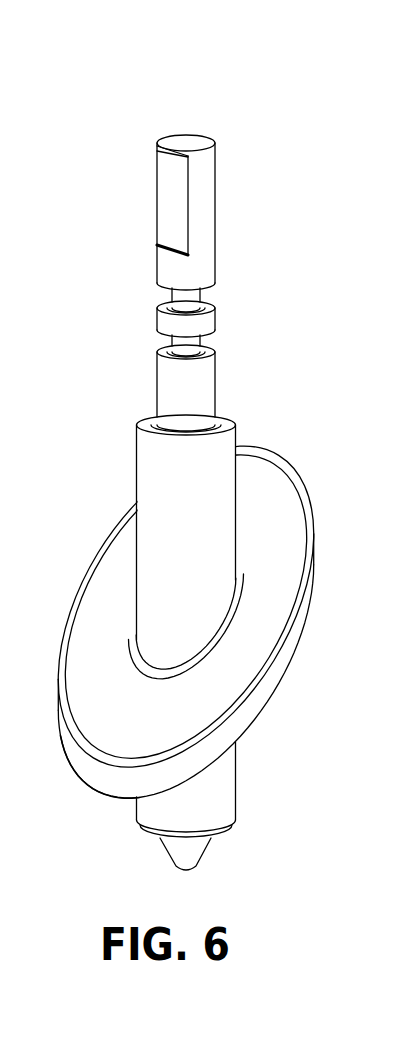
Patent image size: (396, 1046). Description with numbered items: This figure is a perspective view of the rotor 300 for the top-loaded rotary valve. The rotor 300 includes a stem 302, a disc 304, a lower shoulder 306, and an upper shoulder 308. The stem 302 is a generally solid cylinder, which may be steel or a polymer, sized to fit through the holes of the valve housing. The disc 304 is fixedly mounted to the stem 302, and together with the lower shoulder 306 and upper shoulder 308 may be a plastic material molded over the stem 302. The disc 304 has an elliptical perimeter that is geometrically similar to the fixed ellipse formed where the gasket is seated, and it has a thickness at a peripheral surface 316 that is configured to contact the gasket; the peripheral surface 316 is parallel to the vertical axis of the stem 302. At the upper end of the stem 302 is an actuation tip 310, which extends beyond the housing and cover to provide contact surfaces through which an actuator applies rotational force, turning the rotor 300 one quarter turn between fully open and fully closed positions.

The rotor 300 is at (160, 112).
The stem 302 is at (215, 363).
The disc 304 is at (297, 480).
The lower shoulder 306 is at (232, 780).
The upper shoulder 308 is at (137, 445).
The actuation tip 310 is at (157, 186).
The peripheral surface 316 is at (68, 752).